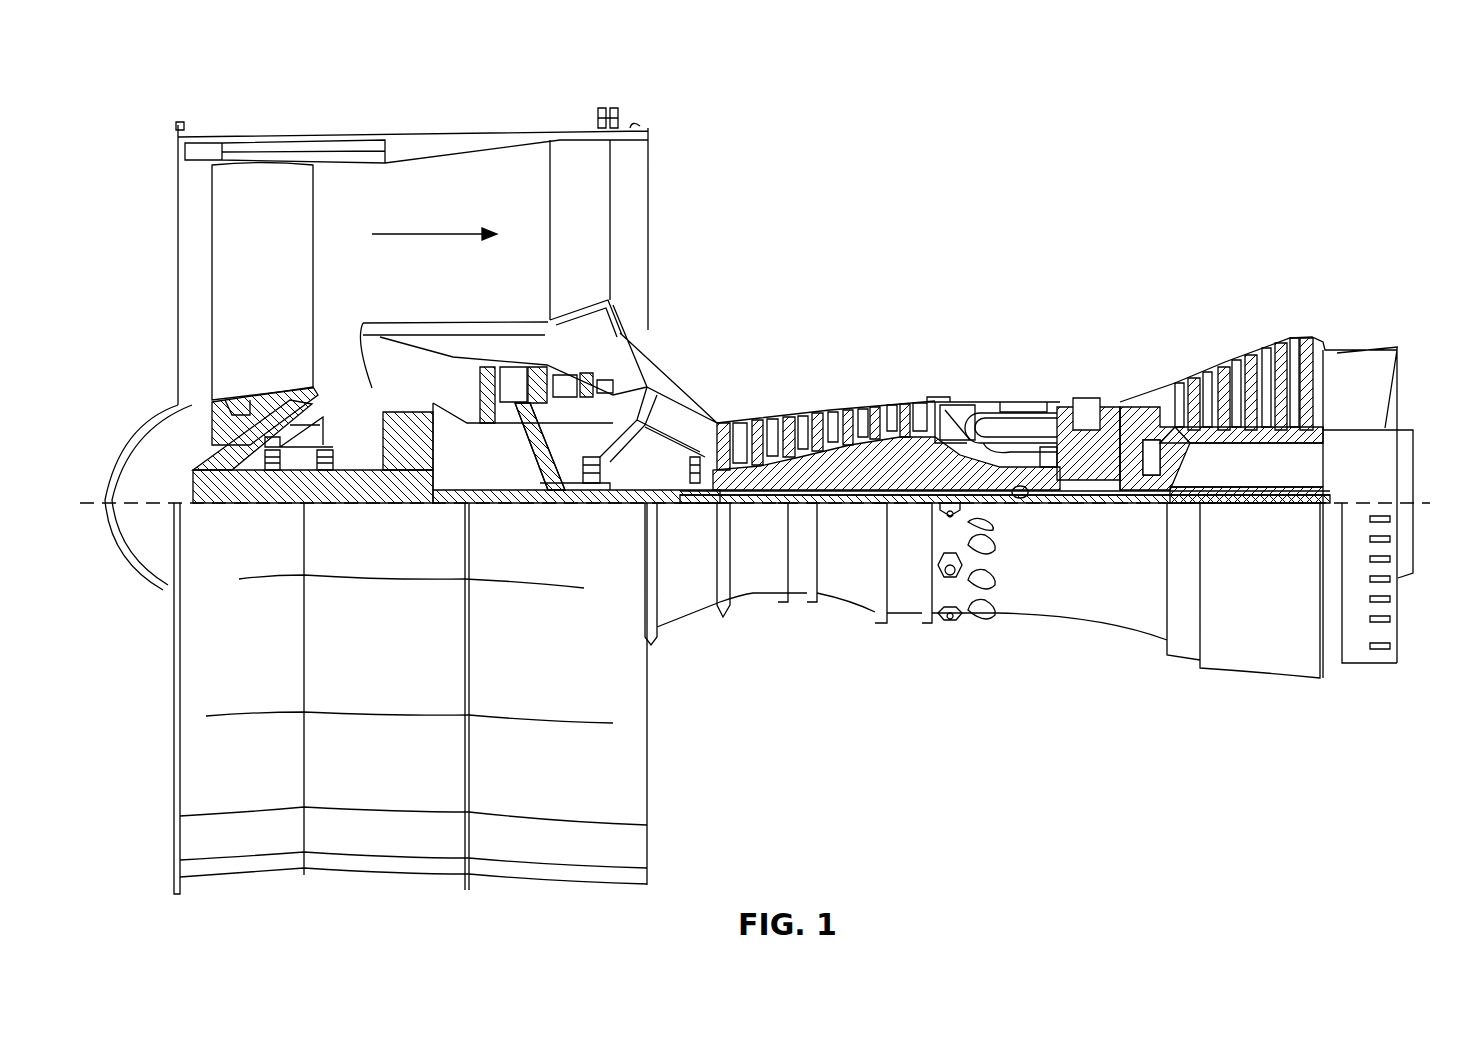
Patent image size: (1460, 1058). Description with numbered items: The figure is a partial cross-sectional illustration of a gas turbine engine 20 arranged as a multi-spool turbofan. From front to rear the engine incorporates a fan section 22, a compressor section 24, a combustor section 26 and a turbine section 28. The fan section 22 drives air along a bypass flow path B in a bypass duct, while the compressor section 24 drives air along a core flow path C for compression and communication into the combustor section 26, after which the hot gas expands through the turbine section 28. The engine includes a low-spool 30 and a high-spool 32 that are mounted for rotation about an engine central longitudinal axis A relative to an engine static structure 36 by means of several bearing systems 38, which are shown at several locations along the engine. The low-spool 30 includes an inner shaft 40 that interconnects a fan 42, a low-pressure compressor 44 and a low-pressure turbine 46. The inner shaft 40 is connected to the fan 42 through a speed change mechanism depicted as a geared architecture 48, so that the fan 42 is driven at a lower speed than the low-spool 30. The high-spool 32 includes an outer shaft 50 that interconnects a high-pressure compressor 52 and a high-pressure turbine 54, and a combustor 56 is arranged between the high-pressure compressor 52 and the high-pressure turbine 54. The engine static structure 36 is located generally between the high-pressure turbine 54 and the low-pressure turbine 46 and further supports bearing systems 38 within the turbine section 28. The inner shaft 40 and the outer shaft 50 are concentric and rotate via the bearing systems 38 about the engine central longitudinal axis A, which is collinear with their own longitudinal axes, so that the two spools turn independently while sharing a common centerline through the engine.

The gas turbine engine 20 is at (1212, 178).
The fan section 22 is at (186, 101).
The compressor section 24 is at (835, 366).
The combustor section 26 is at (1002, 366).
The turbine section 28 is at (1149, 350).
The low-spool 30 is at (871, 504).
The high-spool 32 is at (920, 455).
The engine static structure 36 is at (907, 623).
The bearing systems 38 is at (273, 478).
The inner shaft 40 is at (662, 500).
The fan 42 is at (291, 260).
The low-pressure compressor 44 is at (562, 378).
The low-pressure turbine 46 is at (1253, 365).
The geared architecture 48 is at (410, 475).
The outer shaft 50 is at (1033, 490).
The high-pressure compressor 52 is at (827, 472).
The high-pressure turbine 54 is at (1083, 400).
The combustor 56 is at (1013, 423).
The engine central longitudinal axis A is at (1420, 500).
The bypass flow path B is at (437, 232).
The core flow path C is at (364, 362).